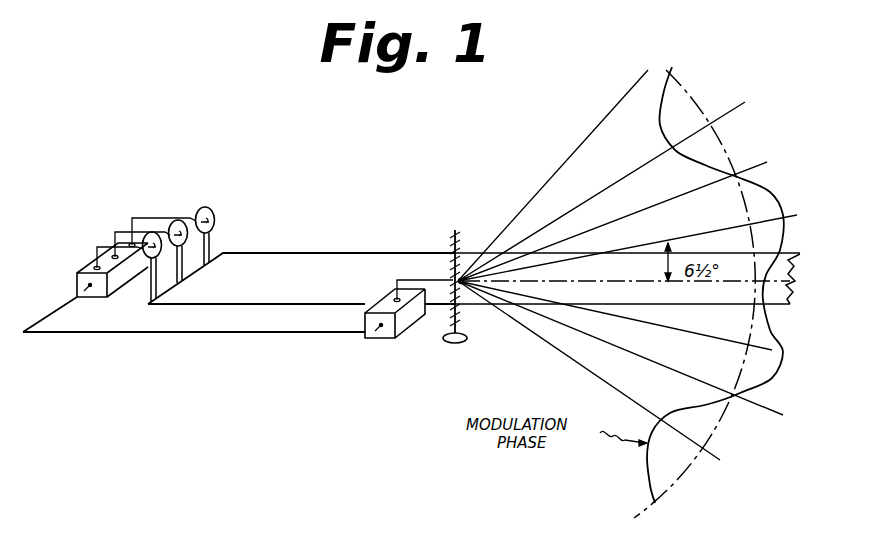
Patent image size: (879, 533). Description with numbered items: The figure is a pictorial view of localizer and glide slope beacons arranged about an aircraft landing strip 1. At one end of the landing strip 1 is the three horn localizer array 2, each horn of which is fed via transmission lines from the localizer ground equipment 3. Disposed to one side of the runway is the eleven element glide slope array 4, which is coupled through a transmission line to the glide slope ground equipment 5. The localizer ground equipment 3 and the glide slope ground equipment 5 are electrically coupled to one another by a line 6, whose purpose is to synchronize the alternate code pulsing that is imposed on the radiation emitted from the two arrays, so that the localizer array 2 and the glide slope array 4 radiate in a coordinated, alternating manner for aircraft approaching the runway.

The aircraft landing strip 1 is at (308, 253).
The three horn localizer array 2 is at (200, 206).
The localizer ground equipment 3 is at (77, 277).
The eleven element glide slope array 4 is at (457, 231).
The glide slope ground equipment 5 is at (407, 334).
The line 6 is at (258, 335).